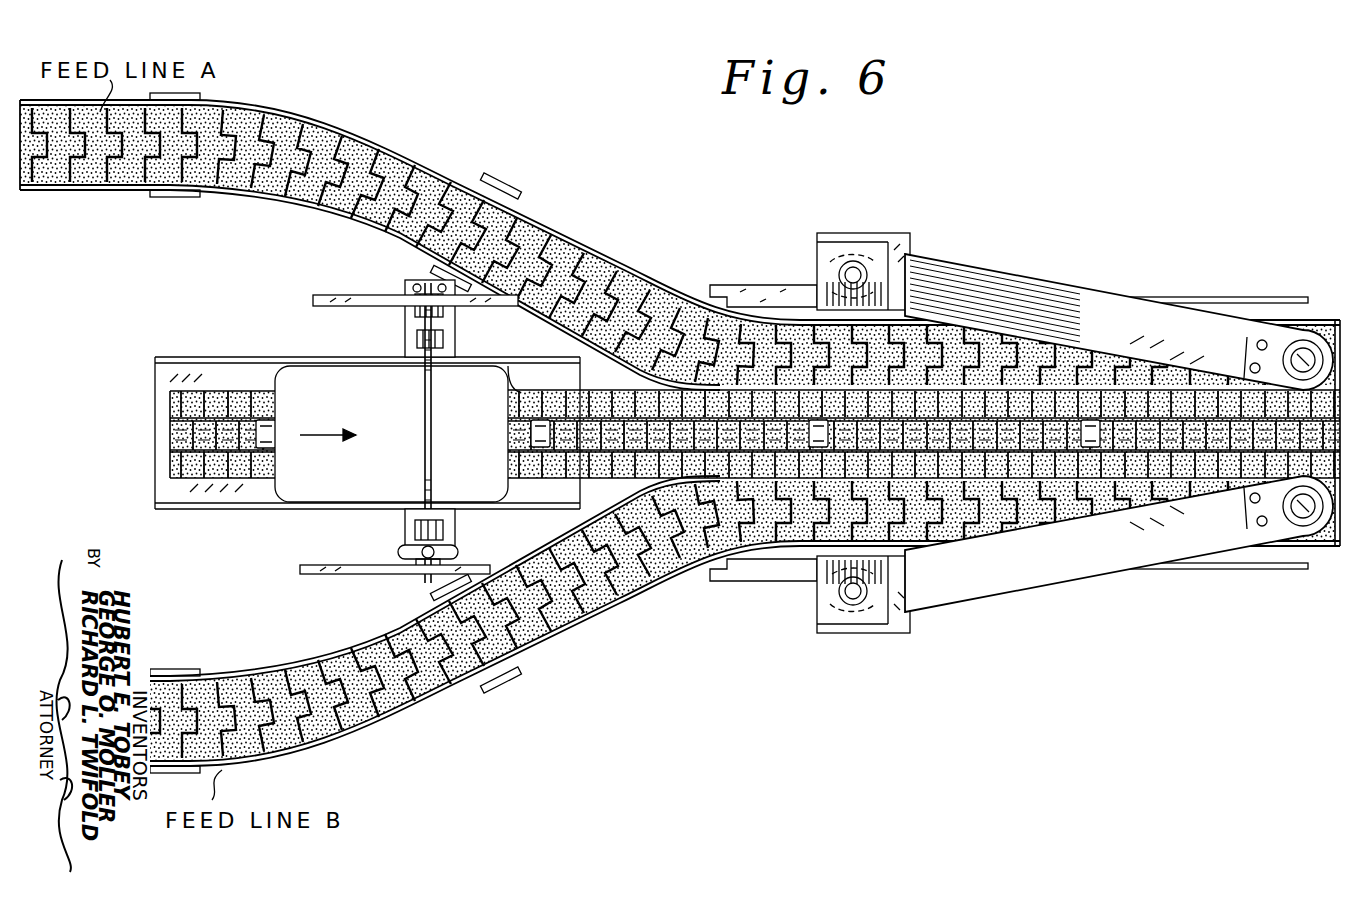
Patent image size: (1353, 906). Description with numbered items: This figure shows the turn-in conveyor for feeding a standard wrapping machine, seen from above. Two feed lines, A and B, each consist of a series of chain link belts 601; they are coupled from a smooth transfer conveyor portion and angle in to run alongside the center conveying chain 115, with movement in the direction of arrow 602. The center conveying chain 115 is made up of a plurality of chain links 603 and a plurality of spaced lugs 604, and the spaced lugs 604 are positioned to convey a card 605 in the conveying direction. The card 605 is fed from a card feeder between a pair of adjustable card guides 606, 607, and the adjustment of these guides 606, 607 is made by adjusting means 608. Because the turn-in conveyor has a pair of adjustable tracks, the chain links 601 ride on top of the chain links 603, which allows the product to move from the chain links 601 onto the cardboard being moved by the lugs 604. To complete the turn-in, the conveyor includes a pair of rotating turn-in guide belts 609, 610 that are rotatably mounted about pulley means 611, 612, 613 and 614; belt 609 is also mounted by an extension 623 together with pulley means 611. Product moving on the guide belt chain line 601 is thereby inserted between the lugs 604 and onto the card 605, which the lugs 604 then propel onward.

The center conveying chain 115 is at (820, 405).
The chain link belts 601 is at (122, 170).
The arrow 602 is at (340, 432).
The chain links 603 is at (545, 448).
The spaced lugs 604 is at (260, 432).
The card 605 is at (518, 382).
The adjustable card guide 606 is at (180, 358).
The adjustable card guide 607 is at (232, 510).
The adjusting means 608 is at (420, 556).
The turn-in guide belt 609 is at (1060, 572).
The turn-in guide belt 610 is at (1075, 296).
The pulley means 611 is at (1308, 528).
The pulley means 612 is at (880, 612).
The pulley means 613 is at (1303, 340).
The pulley means 614 is at (876, 250).
The extension 623 is at (1022, 560).